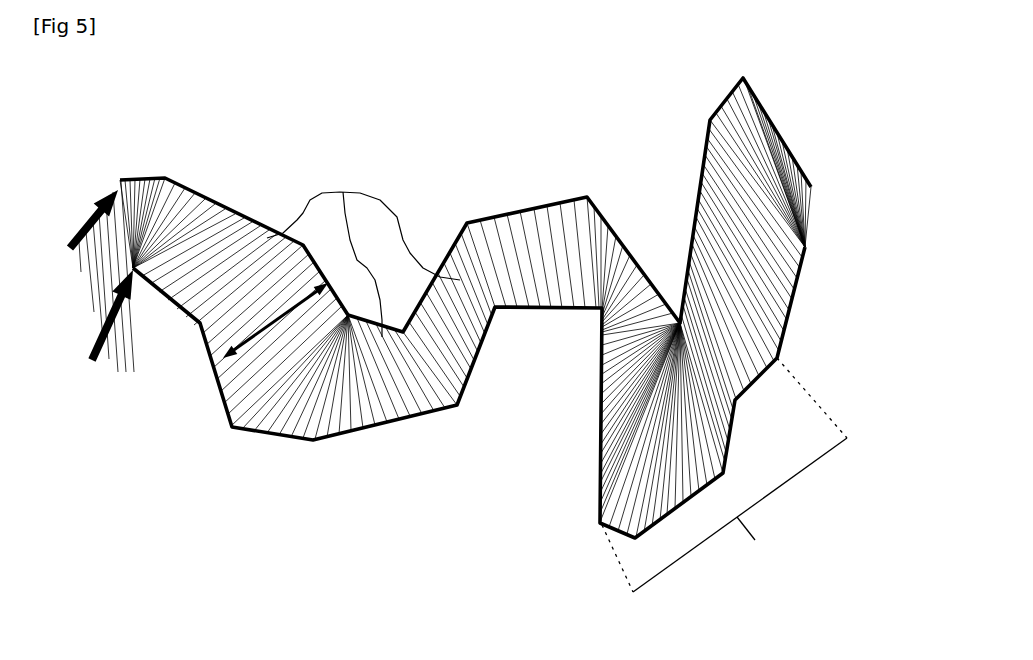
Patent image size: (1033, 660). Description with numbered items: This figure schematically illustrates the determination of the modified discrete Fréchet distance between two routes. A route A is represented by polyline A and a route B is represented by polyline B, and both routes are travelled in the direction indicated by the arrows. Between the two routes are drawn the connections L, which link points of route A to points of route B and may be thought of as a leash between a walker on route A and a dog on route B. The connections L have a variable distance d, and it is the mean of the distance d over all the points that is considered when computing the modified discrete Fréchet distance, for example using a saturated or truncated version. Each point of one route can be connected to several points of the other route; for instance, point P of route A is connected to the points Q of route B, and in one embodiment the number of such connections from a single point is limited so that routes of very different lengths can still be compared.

The route A is at (465, 205).
The route B is at (469, 392).
The connections L is at (363, 242).
The point P is at (680, 320).
The distance d is at (275, 320).
The points Q1 to Qn Q is at (739, 486).